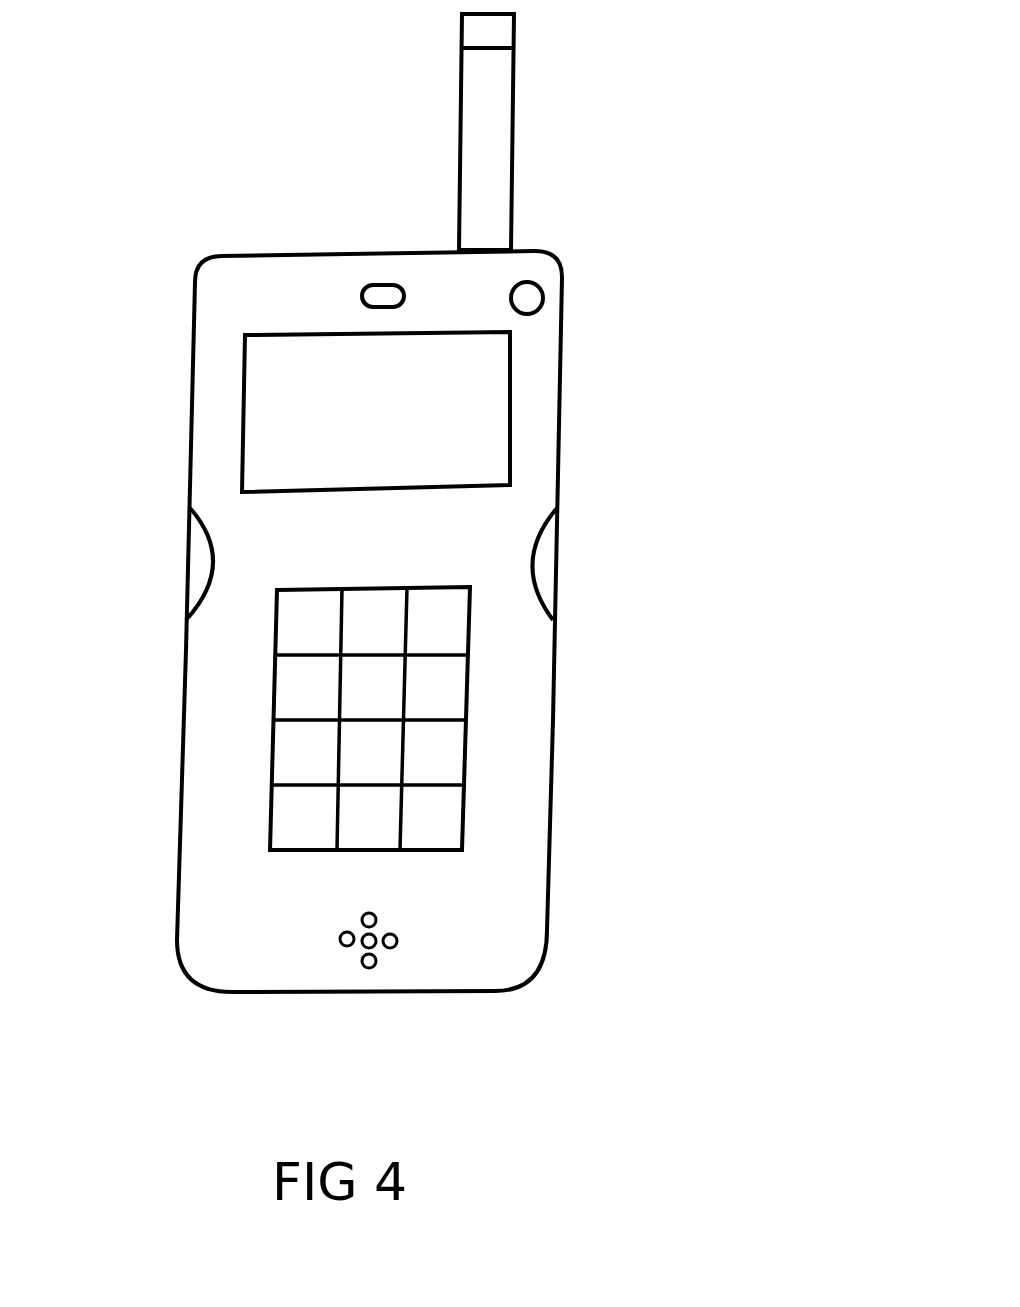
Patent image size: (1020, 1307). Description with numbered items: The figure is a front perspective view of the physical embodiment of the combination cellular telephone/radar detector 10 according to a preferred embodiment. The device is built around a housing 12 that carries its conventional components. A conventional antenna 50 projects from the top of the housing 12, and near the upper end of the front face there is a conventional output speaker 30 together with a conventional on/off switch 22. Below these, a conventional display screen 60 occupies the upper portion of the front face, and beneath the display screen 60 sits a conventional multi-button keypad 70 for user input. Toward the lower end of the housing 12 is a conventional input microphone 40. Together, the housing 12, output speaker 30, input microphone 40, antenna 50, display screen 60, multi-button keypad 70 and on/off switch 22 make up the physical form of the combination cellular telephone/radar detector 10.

The combination cellular telephone/radar detector 10 is at (720, 400).
The housing 12 is at (530, 720).
The on/off switch 22 is at (530, 297).
The output speaker 30 is at (370, 296).
The input microphone 40 is at (382, 953).
The antenna 50 is at (498, 130).
The display screen 60 is at (390, 434).
The multi-button keypad 70 is at (453, 777).